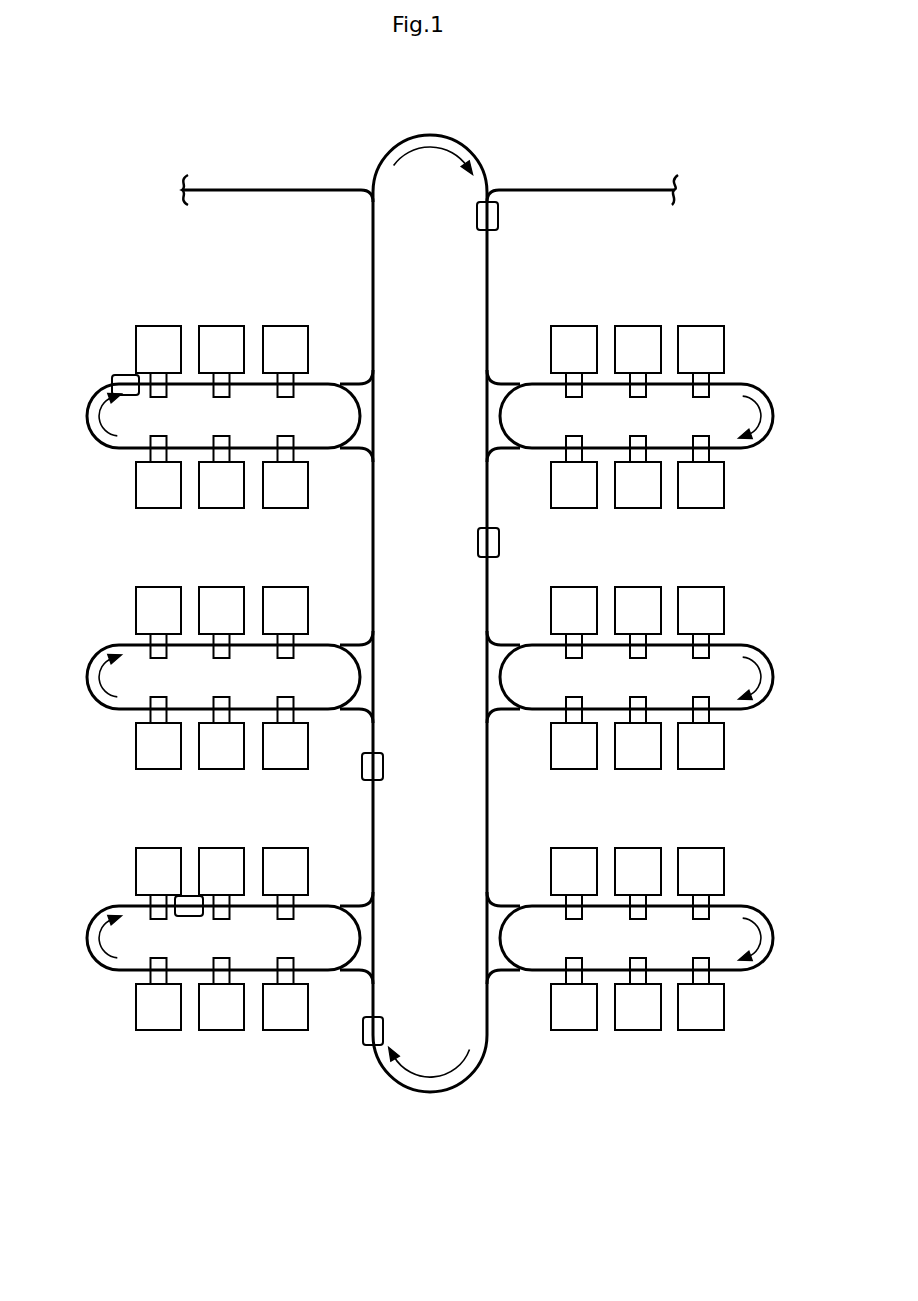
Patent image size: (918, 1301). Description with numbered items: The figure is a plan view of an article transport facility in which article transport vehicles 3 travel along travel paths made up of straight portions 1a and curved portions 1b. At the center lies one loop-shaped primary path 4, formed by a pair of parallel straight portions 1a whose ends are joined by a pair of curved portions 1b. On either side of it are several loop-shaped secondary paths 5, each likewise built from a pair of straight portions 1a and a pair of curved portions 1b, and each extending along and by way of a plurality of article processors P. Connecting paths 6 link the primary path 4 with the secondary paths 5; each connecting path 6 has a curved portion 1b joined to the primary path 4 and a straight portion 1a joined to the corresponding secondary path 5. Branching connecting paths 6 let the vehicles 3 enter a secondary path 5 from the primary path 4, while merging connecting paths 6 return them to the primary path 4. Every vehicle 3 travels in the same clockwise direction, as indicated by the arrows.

The straight portion 1a is at (133, 450).
The curved portion 1b is at (443, 135).
The article transport vehicle 3 is at (500, 215).
The primary path 4 is at (488, 283).
The secondary path 5 is at (105, 450).
The connecting path 6 is at (332, 1045).
The article processor P is at (285, 327).